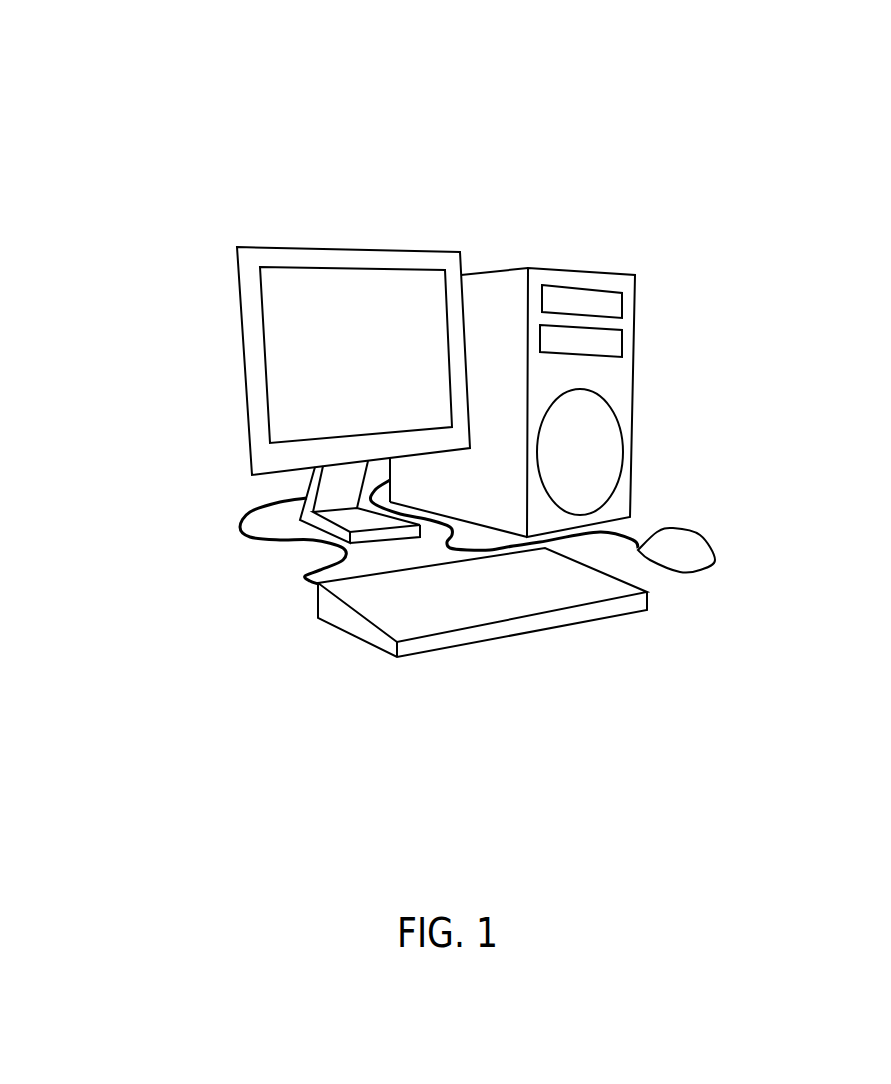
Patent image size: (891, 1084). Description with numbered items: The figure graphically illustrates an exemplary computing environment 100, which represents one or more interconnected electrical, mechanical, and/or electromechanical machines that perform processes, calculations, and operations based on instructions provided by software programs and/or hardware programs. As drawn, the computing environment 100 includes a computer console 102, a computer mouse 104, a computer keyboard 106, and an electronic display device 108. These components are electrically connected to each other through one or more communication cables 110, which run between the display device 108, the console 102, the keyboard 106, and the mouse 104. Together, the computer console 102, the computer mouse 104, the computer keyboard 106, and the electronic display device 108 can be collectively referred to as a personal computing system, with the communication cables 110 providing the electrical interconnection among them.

The computing environment 100 is at (828, 143).
The computer console 102 is at (563, 257).
The computer mouse 104 is at (680, 595).
The computer keyboard 106 is at (507, 645).
The electronic display device 108 is at (357, 233).
The communication cables 110 is at (228, 513).